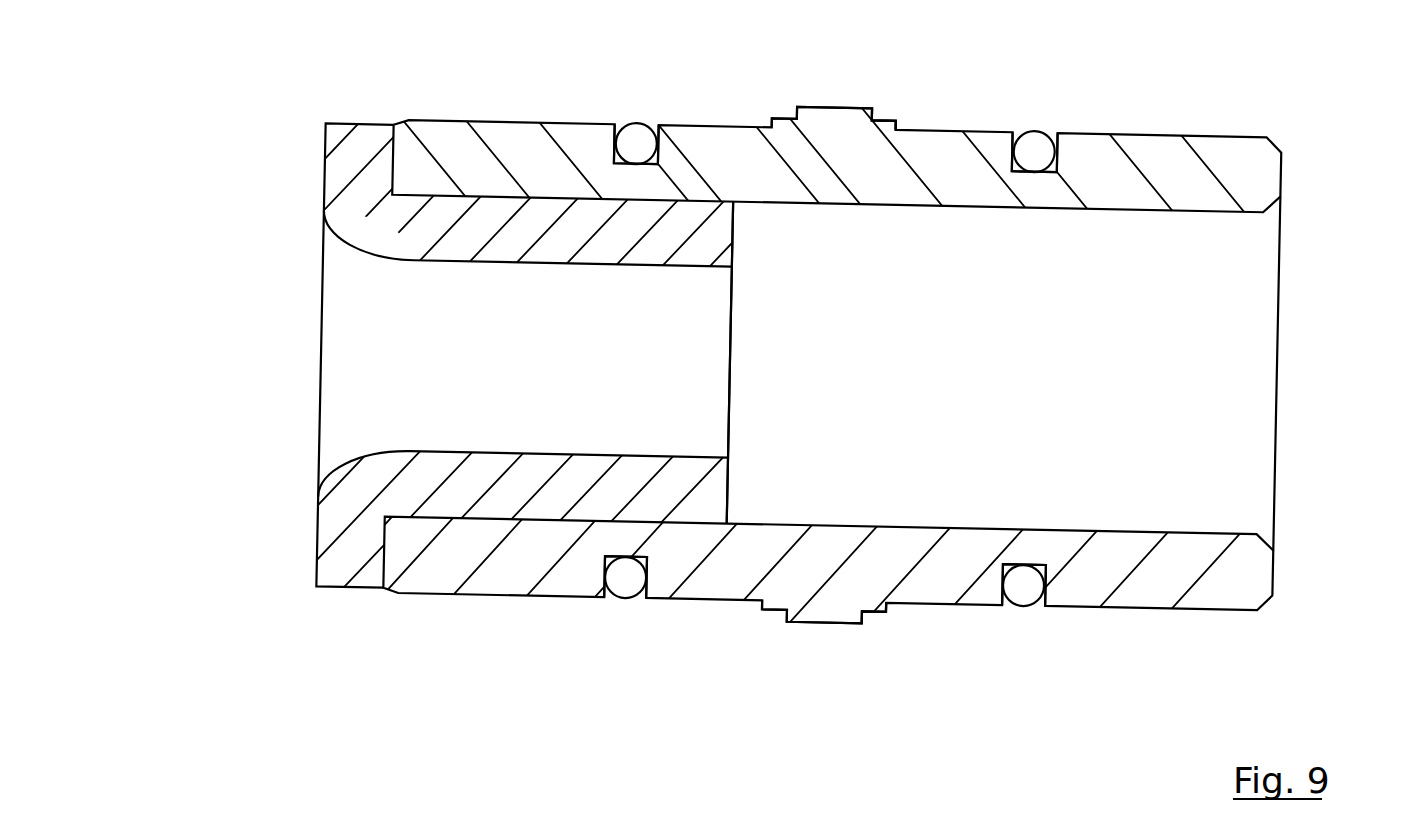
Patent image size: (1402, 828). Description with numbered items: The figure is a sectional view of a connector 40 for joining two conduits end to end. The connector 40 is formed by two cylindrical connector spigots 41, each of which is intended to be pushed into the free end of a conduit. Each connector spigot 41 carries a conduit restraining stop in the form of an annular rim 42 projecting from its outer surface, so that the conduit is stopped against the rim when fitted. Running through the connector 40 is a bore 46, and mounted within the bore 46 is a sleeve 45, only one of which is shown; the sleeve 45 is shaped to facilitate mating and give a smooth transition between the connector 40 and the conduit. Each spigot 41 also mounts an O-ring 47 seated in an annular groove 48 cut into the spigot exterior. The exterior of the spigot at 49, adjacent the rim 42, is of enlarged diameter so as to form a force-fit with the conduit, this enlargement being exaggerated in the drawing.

The connector 40 is at (1287, 240).
The connector spigot 41 is at (1222, 165).
The annular rim 42 is at (826, 117).
The sleeve 45 is at (337, 398).
The bore 46 is at (931, 380).
The O-ring 47 is at (1036, 152).
The annular groove 48 is at (1018, 140).
The enlarged diameter exterior portion 49 is at (892, 117).